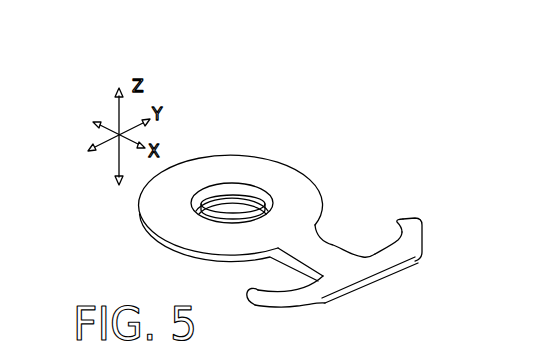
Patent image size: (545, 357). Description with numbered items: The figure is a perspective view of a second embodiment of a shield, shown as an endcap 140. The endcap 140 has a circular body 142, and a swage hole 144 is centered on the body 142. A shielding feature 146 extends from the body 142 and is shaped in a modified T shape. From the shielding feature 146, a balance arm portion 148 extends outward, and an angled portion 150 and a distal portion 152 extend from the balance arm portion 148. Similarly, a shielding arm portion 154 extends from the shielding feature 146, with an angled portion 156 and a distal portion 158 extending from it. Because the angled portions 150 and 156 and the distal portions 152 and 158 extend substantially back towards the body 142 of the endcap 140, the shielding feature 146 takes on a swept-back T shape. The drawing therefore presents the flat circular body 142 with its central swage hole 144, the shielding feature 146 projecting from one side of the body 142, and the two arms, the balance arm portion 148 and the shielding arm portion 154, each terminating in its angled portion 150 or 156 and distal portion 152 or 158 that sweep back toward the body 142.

The endcap 140 is at (307, 141).
The circular body 142 is at (305, 195).
The aperture 144 is at (228, 193).
The shielding feature 146 is at (349, 240).
The balance arm portion 148 is at (393, 253).
The angled portion 150 is at (413, 239).
The distal portion 152 is at (404, 219).
The shielding arm portion 154 is at (316, 293).
The angled portion 156 is at (271, 299).
The distal portion 158 is at (255, 290).